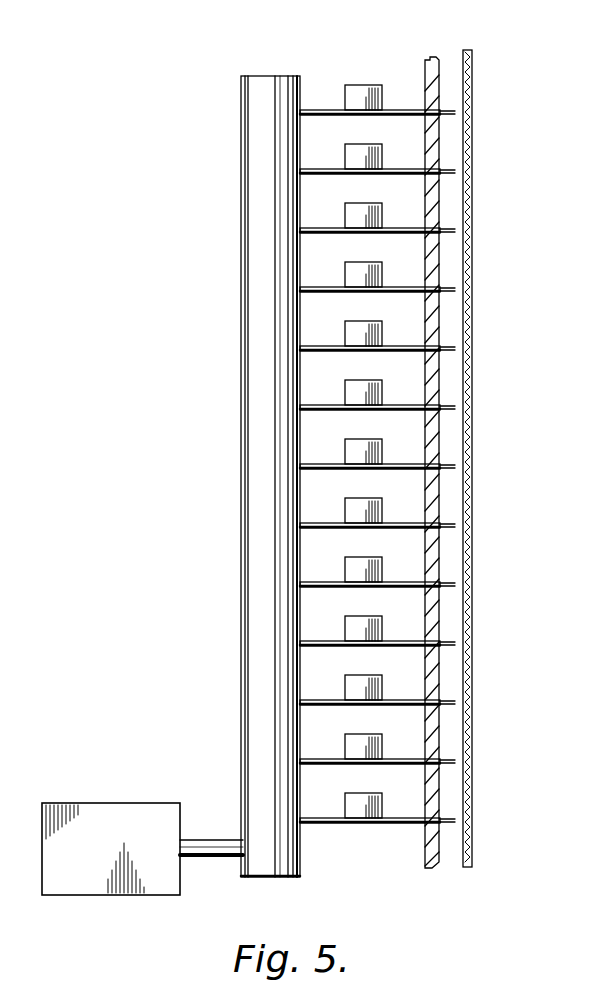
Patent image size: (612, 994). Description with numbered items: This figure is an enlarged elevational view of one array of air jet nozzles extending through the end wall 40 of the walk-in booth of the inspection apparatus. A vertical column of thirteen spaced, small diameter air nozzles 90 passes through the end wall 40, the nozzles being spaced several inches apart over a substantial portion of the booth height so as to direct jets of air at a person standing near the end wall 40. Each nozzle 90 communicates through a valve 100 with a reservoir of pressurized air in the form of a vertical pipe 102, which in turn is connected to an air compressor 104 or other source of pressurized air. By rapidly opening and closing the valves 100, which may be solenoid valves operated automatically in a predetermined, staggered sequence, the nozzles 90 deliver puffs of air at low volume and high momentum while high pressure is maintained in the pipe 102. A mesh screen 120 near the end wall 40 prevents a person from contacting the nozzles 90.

The end wall 40 is at (438, 67).
The air nozzles 90 is at (447, 110).
The valve 100 is at (358, 88).
The vertical pipe 102 is at (247, 187).
The air compressor 104 is at (92, 803).
The mesh screen 120 is at (472, 157).